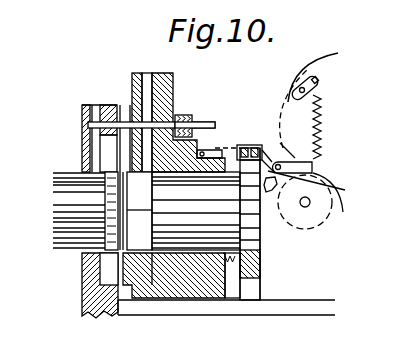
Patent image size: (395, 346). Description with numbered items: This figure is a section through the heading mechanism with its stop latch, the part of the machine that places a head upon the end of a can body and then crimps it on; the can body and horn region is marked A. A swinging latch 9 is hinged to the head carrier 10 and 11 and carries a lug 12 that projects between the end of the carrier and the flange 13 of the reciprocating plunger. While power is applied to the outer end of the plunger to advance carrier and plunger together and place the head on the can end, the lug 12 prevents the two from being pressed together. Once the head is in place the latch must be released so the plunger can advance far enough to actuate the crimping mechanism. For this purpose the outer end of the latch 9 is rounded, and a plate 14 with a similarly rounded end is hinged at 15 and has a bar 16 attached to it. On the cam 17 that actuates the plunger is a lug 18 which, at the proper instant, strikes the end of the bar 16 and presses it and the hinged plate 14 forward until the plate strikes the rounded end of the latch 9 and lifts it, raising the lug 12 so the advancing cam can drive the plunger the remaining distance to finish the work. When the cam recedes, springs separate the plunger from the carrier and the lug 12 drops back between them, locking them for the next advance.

The shaft A is at (66, 188).
The swinging latch 9 is at (262, 150).
The carrier 10 is at (193, 151).
The carrier 11 is at (203, 150).
The lug 12 is at (223, 172).
The flange 13 is at (245, 224).
The plate 14 is at (284, 158).
The hinge 15 is at (268, 191).
The bar 16 is at (314, 164).
The cam 17 is at (324, 68).
The lug 18 is at (294, 90).